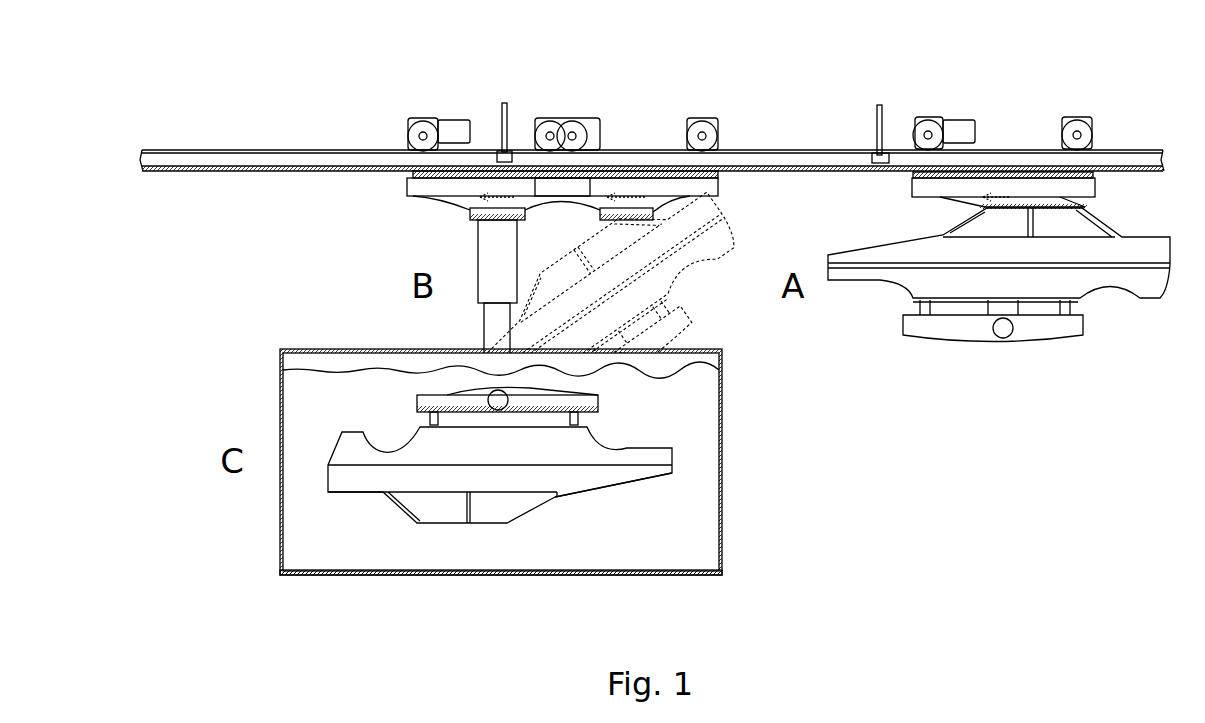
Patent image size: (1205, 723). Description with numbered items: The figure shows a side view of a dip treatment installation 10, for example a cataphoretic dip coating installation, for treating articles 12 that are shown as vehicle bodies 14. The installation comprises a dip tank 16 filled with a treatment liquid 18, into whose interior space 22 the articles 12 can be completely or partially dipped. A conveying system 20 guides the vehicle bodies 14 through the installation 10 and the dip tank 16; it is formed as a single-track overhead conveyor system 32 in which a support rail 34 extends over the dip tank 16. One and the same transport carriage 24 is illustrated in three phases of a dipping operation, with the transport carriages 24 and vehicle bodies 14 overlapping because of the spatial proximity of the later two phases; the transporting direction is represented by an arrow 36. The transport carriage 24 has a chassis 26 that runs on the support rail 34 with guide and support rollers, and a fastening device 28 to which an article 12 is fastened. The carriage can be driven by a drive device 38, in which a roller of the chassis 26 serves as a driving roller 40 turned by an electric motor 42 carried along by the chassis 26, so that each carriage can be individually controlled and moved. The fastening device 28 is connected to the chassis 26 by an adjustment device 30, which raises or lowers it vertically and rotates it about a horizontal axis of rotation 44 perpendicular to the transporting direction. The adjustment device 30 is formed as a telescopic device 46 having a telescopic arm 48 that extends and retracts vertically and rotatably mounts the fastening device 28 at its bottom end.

The dip treatment installation 10 is at (780, 77).
The articles 12 is at (560, 478).
The vehicle bodies 14 is at (590, 478).
The dip tank 16 is at (722, 507).
The treatment liquid 18 is at (707, 556).
The conveying system 20 is at (508, 84).
The interior space 22 is at (375, 543).
The transport carriage 24 is at (483, 110).
The chassis 26 is at (397, 188).
The fastening device 28 is at (427, 403).
The adjustment device 30 is at (472, 328).
The overhead conveyor system 32 is at (577, 80).
The support rail 34 is at (142, 155).
The arrow 36 is at (517, 195).
The drive device 38 is at (420, 112).
The driving roller 40 is at (412, 137).
The electric motor 42 is at (455, 128).
The axis of rotation 44 is at (498, 410).
The telescopic device 46 is at (472, 267).
The telescopic arm 48 is at (505, 237).